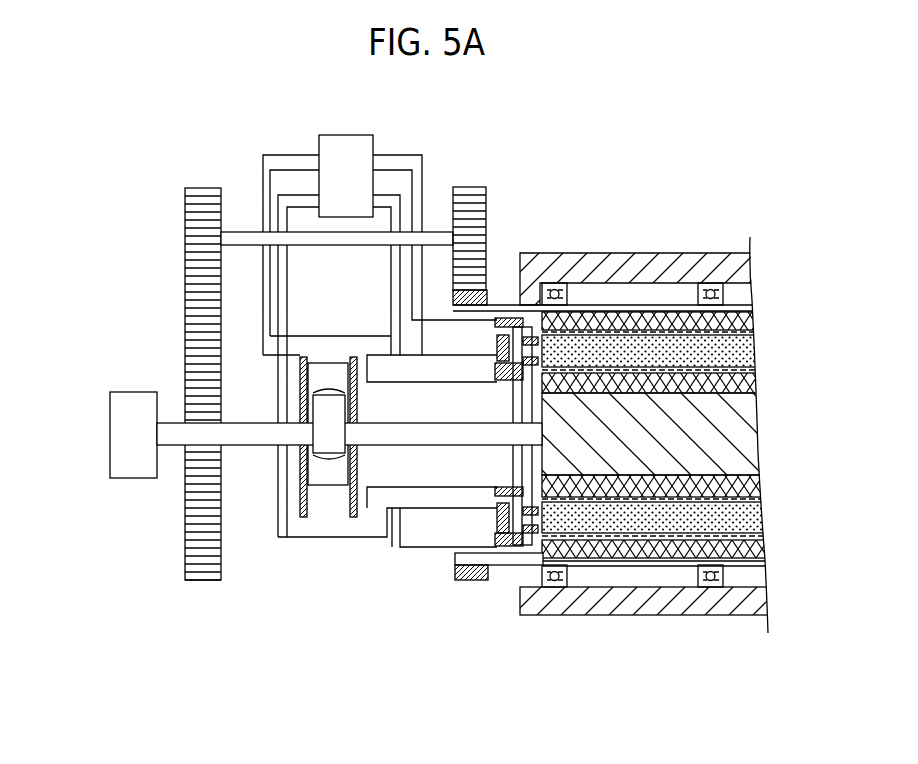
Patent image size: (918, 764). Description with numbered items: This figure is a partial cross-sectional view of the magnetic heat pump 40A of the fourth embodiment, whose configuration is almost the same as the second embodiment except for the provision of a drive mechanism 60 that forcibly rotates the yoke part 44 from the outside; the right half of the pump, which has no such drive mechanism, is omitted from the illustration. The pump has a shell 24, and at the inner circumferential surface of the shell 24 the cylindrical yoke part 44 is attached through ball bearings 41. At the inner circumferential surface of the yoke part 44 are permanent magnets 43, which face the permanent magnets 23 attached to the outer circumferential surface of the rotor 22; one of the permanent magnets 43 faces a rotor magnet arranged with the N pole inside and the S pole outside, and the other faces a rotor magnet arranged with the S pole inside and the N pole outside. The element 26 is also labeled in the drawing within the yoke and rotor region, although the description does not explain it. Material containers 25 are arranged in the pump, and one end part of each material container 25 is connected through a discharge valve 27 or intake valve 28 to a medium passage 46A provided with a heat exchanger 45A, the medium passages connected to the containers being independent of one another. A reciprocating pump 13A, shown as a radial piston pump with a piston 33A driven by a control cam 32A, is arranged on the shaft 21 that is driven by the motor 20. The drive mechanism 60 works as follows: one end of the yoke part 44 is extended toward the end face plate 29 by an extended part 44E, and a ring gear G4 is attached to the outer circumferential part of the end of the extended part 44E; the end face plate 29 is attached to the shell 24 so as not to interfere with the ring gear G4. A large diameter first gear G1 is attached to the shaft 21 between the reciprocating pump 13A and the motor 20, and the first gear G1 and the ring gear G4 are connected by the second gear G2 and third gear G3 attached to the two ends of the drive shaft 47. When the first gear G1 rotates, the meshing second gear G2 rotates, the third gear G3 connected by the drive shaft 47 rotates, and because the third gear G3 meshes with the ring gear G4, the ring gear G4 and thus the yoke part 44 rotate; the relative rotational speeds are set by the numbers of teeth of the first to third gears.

The drive mechanism 60 is at (163, 211).
The first gear G1 is at (208, 582).
The second gear G2 is at (205, 187).
The third gear G3 is at (467, 187).
The ring gear G4 is at (468, 582).
The motor 20 is at (132, 478).
The shaft 21 is at (437, 435).
The reciprocating pump 13A is at (344, 578).
The control cam 32A is at (317, 462).
The piston 33A is at (336, 480).
The medium passage 46A is at (293, 275).
The drive shaft 47 is at (245, 232).
The heat exchanger 45A is at (356, 135).
The magnetic heat pump 40A is at (728, 186).
The ball bearings 41 is at (583, 253).
The permanent magnets 43 is at (578, 562).
The yoke part 44 is at (628, 295).
The extended part 44E is at (510, 557).
The material containers 25 is at (683, 310).
The permanent magnet 26 is at (718, 350).
The discharge valve 27 is at (488, 298).
The intake valve 28 is at (519, 320).
The end face plate 29 is at (502, 397).
The rotor 22 is at (600, 457).
The permanent magnets 23 is at (697, 405).
The shell 24 is at (722, 608).